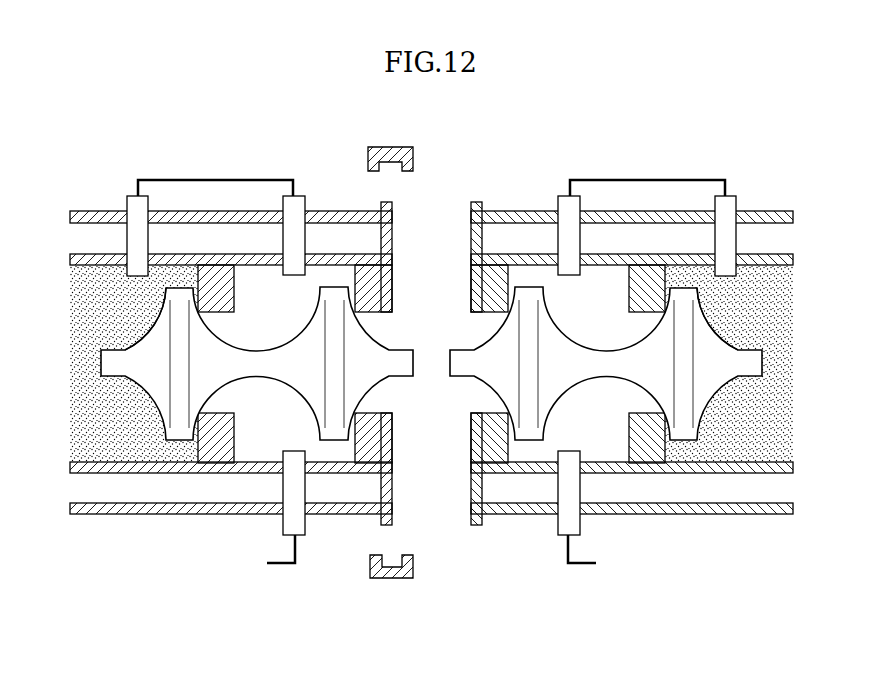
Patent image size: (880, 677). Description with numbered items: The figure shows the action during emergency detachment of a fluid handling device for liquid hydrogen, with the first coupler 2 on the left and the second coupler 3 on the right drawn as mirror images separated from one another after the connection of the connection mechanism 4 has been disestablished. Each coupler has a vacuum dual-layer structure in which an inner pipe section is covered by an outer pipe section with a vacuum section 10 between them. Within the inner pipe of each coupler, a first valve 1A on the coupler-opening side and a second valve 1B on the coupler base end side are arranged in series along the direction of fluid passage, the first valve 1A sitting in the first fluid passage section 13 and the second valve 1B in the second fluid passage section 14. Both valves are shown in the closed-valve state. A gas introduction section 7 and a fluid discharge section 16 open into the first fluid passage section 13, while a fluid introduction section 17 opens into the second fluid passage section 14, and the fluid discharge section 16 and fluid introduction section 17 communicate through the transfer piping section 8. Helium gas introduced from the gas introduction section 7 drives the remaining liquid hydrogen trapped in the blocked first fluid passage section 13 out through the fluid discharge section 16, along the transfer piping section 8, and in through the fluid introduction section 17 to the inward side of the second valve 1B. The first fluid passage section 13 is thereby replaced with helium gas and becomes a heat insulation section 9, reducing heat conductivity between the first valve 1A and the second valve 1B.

The first valve 1A is at (478, 347).
The second valve 1B is at (125, 339).
The first coupler 2 is at (158, 535).
The second coupler 3 is at (718, 540).
The connection mechanism 4 is at (398, 577).
The gas introduction section 7 is at (306, 527).
The transfer piping section 8 is at (203, 180).
The heat insulation section 9 is at (262, 438).
The vacuum section 10 is at (108, 496).
The first fluid passage section 13 is at (260, 295).
The second fluid passage section 14 is at (110, 295).
The fluid discharge section 16 is at (299, 195).
The fluid introduction section 17 is at (137, 195).